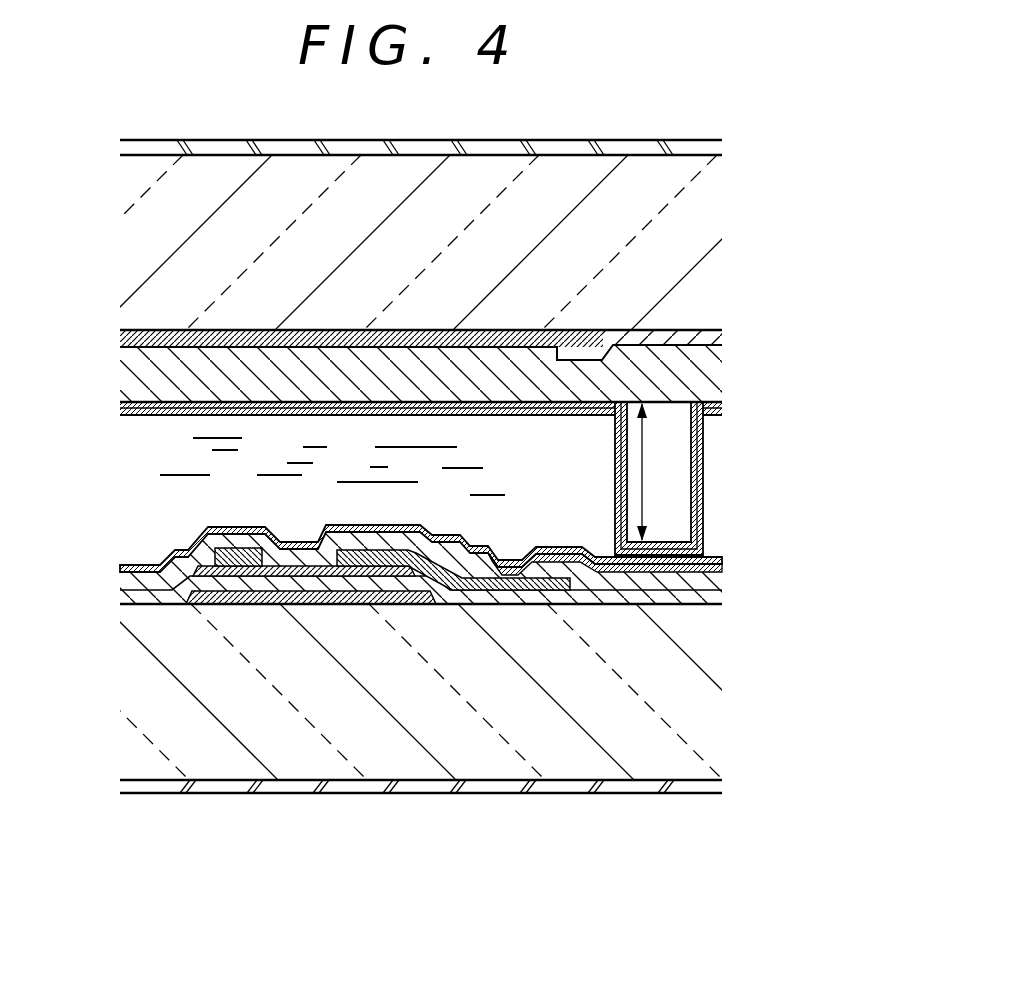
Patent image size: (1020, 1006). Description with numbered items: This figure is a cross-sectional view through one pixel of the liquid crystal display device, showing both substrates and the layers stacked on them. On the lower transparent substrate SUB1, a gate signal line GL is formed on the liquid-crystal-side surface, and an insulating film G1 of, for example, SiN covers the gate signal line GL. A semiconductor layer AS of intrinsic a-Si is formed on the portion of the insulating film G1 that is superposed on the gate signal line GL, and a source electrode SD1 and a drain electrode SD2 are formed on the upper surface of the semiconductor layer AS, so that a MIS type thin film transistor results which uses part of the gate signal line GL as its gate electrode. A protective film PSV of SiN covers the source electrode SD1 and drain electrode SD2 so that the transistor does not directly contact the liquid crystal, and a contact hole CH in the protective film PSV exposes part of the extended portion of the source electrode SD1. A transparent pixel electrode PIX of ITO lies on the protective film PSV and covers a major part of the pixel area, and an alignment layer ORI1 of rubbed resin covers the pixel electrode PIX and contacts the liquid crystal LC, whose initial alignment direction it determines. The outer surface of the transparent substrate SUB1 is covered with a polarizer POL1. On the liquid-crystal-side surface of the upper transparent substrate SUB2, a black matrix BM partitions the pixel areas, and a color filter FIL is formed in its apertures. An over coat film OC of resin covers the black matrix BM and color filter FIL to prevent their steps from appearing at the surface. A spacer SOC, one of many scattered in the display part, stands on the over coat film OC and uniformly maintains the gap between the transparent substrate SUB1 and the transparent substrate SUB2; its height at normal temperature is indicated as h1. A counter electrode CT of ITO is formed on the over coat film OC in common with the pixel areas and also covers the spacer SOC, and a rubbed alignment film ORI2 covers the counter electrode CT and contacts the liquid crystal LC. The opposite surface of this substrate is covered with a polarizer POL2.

The polarizer POL2 is at (722, 144).
The transparent substrate SUB2 is at (708, 212).
The black matrix BM is at (122, 336).
The color filter FIL is at (722, 336).
The over coat film OC is at (122, 372).
The counter electrode CT is at (122, 403).
The alignment film ORI2 is at (710, 413).
The liquid crystal LC is at (155, 446).
The spacer SOC is at (675, 463).
The spacer height h1 is at (613, 453).
The contact hole CH is at (548, 548).
The alignment layer ORI1 is at (730, 549).
The pixel electrode PIX is at (725, 560).
The protective film PSV is at (725, 578).
The insulating film G1 is at (722, 603).
The gate signal line GL is at (193, 605).
The semiconductor layer AS is at (192, 553).
The drain electrode SD2 is at (235, 566).
The source electrode SD1 is at (442, 566).
The transparent substrate SUB1 is at (720, 707).
The polarizer POL1 is at (722, 783).